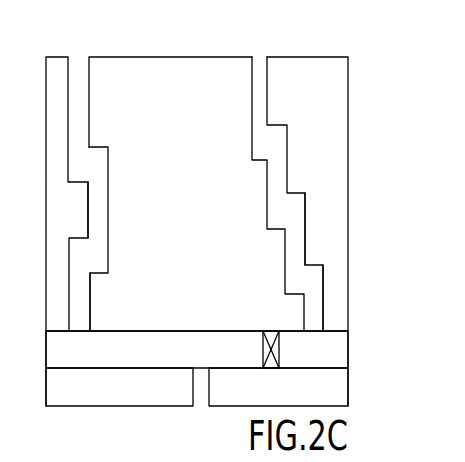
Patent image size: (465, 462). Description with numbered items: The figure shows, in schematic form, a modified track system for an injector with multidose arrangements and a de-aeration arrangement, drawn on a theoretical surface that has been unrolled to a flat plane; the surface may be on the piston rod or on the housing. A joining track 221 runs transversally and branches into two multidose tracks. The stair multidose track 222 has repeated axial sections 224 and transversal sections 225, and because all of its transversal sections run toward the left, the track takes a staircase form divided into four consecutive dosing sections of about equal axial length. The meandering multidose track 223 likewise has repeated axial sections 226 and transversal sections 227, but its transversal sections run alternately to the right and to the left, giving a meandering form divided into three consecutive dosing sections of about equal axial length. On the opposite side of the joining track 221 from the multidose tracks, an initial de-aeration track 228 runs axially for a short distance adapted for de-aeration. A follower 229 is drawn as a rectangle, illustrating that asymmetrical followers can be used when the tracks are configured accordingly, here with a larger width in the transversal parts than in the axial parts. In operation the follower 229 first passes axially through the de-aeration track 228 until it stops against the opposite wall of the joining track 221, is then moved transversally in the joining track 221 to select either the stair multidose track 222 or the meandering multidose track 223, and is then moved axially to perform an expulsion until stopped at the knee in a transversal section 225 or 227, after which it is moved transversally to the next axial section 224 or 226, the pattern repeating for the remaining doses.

The joining track 221 is at (335, 348).
The stair multidose track 222 is at (296, 170).
The meandering multidose track 223 is at (92, 123).
The axial section 224 is at (307, 239).
The transversal section 225 is at (313, 278).
The axial section 226 is at (101, 216).
The transversal section 227 is at (97, 260).
The initial de-aeration track 228 is at (210, 384).
The follower 229 is at (263, 350).